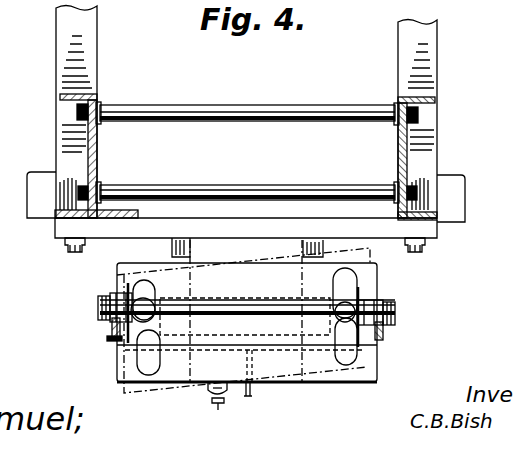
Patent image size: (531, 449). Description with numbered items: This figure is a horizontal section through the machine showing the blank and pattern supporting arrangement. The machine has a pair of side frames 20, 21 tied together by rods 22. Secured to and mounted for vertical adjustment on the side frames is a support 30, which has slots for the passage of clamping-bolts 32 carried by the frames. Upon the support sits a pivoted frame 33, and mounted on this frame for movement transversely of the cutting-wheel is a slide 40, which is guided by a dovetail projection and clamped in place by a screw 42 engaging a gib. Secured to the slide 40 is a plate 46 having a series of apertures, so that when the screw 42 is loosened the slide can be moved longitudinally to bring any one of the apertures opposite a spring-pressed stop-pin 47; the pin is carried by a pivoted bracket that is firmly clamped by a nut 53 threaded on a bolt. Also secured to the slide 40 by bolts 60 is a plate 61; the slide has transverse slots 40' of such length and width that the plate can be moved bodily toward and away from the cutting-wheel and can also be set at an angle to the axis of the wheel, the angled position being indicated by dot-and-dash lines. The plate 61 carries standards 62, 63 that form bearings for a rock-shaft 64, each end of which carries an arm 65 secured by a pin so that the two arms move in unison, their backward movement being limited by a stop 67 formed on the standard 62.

The side frame 20 is at (85, 57).
The side frame 21 is at (421, 50).
The rods 22 is at (250, 108).
The support 30 is at (246, 206).
The clamping-bolts 32 is at (68, 247).
The frame 33 is at (200, 256).
The slide 40 is at (265, 311).
The transverse slots 40' is at (256, 320).
The screw 42 is at (249, 391).
The plate 46 is at (163, 387).
The stop-pin 47 is at (218, 410).
The nut 53 is at (210, 396).
The bolts 60 is at (147, 330).
The plate 61 is at (128, 343).
The standard 62 is at (127, 295).
The standard 63 is at (388, 300).
The rock-shaft 64 is at (98, 304).
The arm 65 is at (110, 330).
The stop 67 is at (110, 338).